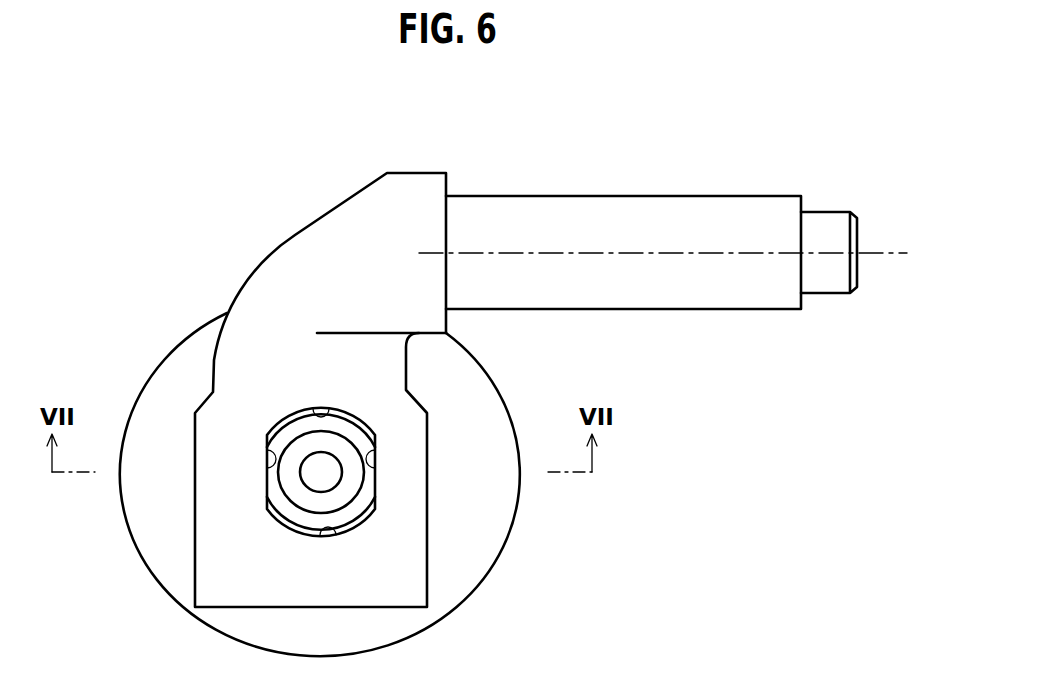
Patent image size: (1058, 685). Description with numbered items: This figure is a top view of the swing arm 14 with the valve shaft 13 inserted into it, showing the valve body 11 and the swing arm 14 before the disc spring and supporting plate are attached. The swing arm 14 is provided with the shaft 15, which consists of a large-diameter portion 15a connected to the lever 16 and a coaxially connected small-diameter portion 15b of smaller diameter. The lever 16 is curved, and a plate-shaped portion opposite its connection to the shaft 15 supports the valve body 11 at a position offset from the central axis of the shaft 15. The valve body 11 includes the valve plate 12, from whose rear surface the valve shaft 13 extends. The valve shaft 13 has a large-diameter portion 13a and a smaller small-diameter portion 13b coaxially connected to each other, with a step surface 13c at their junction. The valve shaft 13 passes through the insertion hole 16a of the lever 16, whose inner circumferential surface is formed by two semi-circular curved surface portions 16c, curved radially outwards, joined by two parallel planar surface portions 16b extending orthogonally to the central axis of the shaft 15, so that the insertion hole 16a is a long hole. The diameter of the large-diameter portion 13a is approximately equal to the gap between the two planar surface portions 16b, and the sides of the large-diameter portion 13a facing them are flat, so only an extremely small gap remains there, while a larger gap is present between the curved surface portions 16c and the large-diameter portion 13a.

The valve body 11 is at (575, 515).
The valve plate 12 is at (501, 517).
The valve shaft 13 is at (357, 522).
The large-diameter portion 13a is at (287, 528).
The small-diameter portion 13b is at (268, 477).
The step surface 13c is at (363, 494).
The swing arm 14 is at (824, 101).
The shaft 15 is at (863, 141).
The large-diameter portion 15a is at (760, 207).
The small-diameter portion 15b is at (825, 220).
The lever 16 is at (360, 194).
The insertion hole 16a is at (283, 378).
The planar surface portions 16b is at (270, 447).
The curved surface portions 16c is at (315, 409).